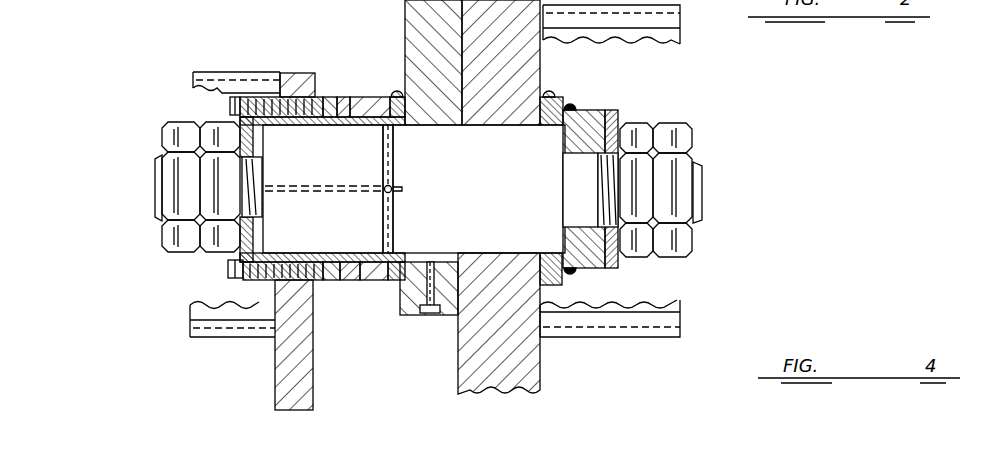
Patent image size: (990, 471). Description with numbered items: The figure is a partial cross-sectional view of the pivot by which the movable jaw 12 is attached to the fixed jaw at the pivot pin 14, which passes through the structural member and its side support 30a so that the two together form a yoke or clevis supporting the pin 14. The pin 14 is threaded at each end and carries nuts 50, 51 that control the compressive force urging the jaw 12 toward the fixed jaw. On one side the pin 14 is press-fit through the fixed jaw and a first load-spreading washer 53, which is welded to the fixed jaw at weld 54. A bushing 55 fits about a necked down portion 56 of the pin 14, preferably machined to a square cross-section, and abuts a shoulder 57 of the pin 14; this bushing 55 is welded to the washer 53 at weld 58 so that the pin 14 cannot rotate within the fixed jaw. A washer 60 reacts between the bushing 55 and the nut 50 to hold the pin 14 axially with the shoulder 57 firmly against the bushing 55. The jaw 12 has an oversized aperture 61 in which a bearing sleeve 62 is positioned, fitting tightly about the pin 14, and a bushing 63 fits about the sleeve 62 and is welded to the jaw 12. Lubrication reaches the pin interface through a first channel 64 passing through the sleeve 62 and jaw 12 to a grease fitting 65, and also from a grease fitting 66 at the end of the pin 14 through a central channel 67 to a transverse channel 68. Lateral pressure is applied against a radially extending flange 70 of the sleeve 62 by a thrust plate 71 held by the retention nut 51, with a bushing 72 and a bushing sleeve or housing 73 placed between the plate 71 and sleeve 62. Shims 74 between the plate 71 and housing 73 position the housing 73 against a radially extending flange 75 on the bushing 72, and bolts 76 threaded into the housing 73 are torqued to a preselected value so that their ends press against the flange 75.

The jaw 12 is at (407, 13).
The pivot pin 14 is at (490, 176).
The side support 30a is at (285, 385).
The nut 50 is at (680, 125).
The nut 51 is at (178, 124).
The load-spreading washer 53 is at (556, 100).
The weld 54 is at (546, 97).
The bushing 55 is at (597, 110).
The necked down portion 56 is at (580, 198).
The shoulder 57 is at (607, 110).
The weld 58 is at (575, 271).
The washer 60 is at (600, 168).
The oversized aperture 61 is at (404, 50).
The bearing sleeve 62 is at (395, 283).
The bushing 63 is at (364, 283).
The first channel 64 is at (452, 318).
The grease fitting 65 is at (431, 316).
The grease fitting 66 is at (162, 177).
The channel 67 is at (331, 185).
The transverse channel 68 is at (392, 212).
The radially extending flange 70 is at (335, 283).
The thrust plate 71 is at (243, 285).
The bushing 72 is at (338, 98).
The bushing sleeve or housing 73 is at (328, 103).
The shims 74 is at (258, 105).
The radially extending flange 75 is at (325, 283).
The bolts 76 is at (228, 108).